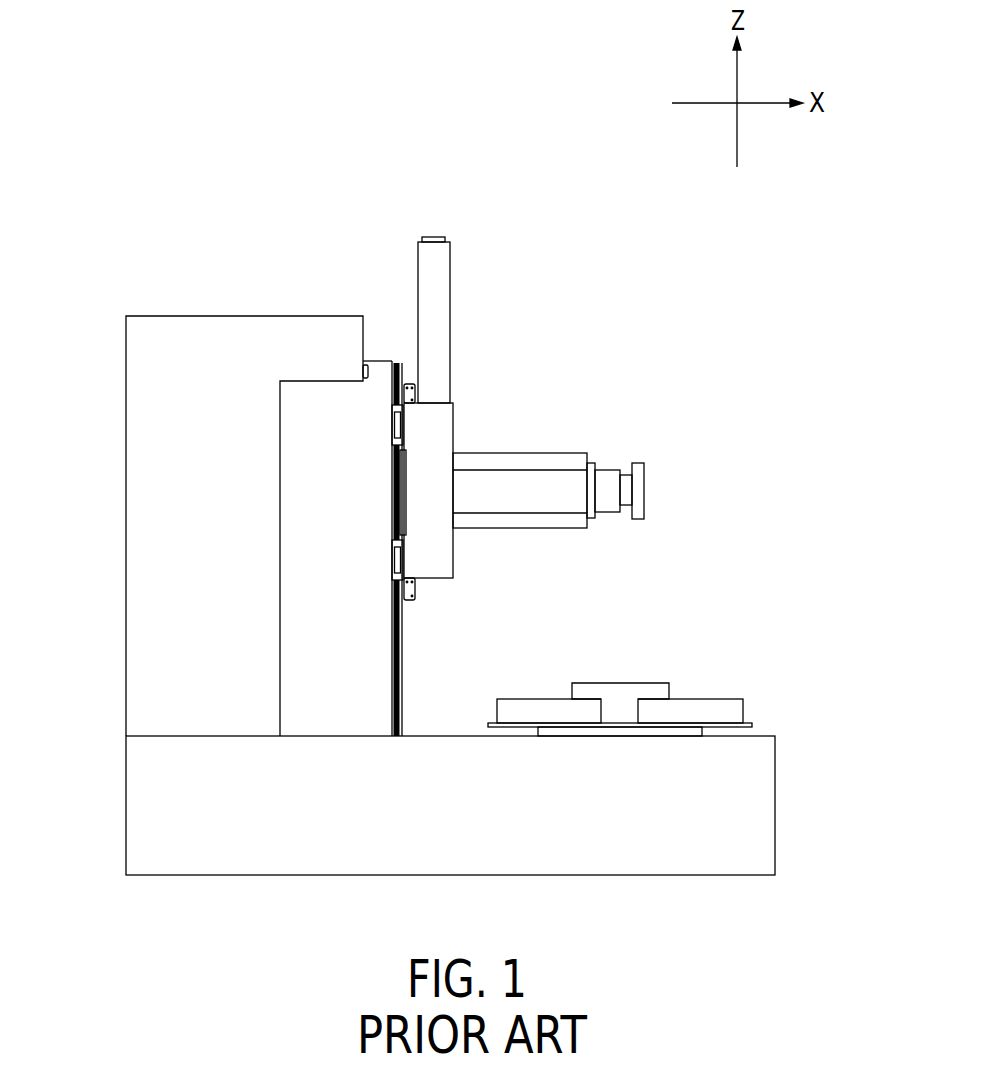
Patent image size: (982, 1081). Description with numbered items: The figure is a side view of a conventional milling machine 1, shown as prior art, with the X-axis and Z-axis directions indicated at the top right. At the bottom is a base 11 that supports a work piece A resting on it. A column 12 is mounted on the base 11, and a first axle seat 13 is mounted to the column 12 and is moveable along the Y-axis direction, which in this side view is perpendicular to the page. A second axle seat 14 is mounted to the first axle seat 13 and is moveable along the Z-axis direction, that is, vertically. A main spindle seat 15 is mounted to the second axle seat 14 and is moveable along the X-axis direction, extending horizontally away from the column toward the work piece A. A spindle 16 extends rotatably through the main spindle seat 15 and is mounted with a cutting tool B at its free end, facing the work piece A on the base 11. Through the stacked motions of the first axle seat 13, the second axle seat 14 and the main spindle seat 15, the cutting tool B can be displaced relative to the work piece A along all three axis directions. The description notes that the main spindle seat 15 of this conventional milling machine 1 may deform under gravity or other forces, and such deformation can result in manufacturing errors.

The milling machine 1 is at (566, 330).
The base 11 is at (776, 803).
The column 12 is at (126, 535).
The first axle seat 13 is at (318, 466).
The second axle seat 14 is at (442, 433).
The main spindle seat 15 is at (530, 500).
The spindle 16 is at (626, 490).
The work piece A is at (618, 683).
The cutting tool B is at (645, 490).